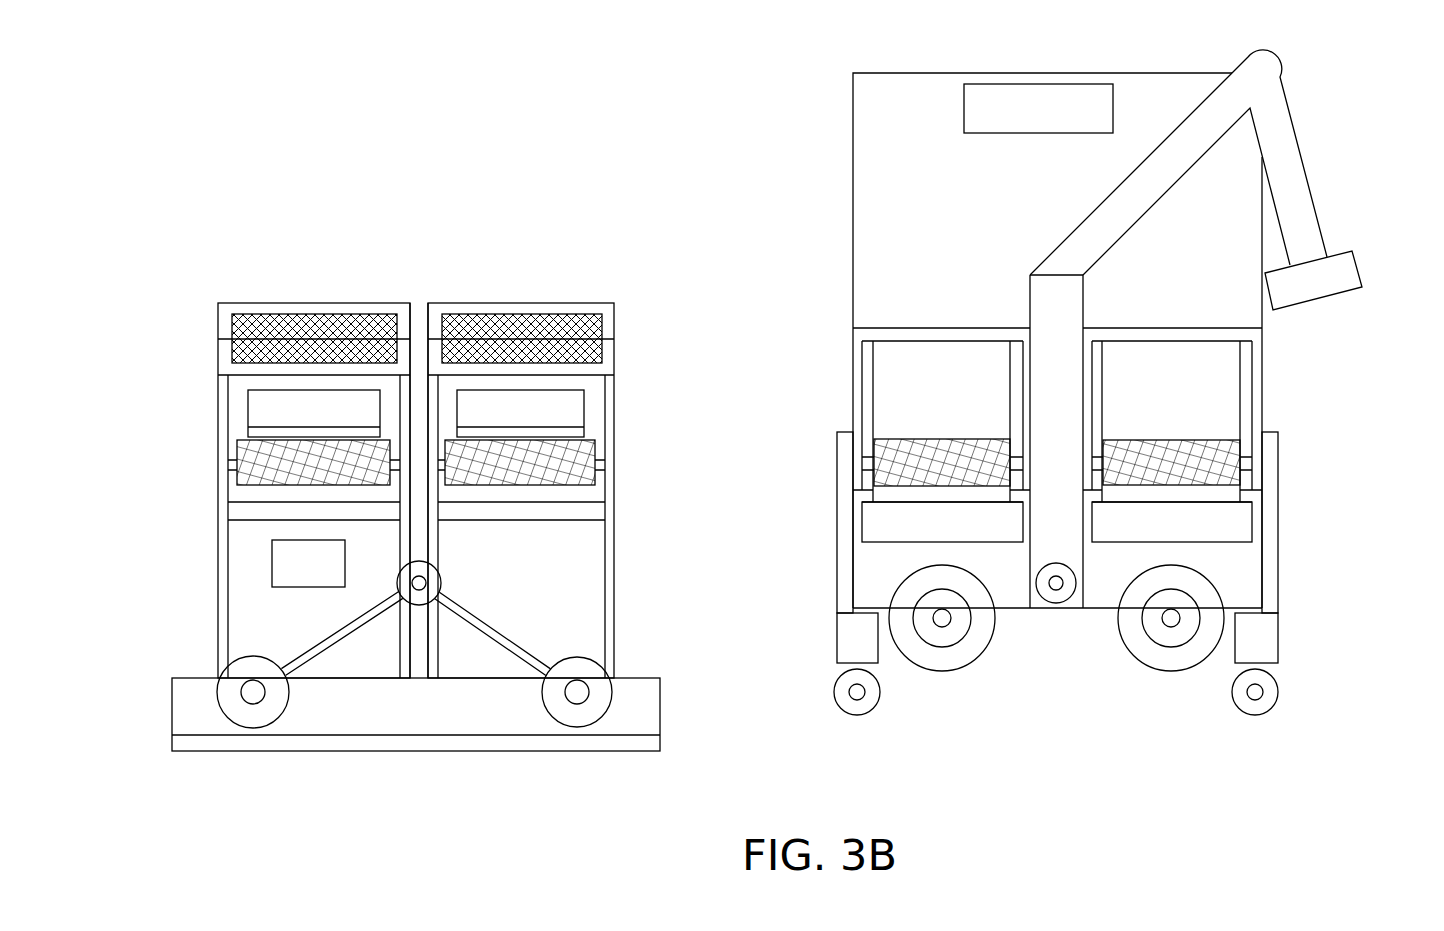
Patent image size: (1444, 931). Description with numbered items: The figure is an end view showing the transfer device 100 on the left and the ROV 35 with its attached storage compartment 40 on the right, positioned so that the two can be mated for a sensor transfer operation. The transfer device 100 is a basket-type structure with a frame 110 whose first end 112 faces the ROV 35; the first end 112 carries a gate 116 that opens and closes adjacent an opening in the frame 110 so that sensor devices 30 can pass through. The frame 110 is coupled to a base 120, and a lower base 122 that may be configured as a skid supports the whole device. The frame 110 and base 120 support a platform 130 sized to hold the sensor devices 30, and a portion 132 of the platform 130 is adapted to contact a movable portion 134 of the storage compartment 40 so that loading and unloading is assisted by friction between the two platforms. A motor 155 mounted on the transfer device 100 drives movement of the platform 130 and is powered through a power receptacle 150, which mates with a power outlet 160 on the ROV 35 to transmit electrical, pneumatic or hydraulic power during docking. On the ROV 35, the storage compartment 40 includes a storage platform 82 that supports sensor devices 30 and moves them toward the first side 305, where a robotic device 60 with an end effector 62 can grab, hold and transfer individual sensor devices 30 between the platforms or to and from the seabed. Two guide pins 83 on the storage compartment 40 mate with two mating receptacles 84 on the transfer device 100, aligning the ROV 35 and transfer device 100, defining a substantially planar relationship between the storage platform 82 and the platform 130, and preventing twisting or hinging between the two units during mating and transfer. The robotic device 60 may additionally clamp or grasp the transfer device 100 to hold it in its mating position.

The transfer device 100 is at (423, 208).
The frame 110 is at (218, 395).
The first end 112 is at (652, 268).
The gate 116 is at (305, 312).
The base 120 is at (198, 616).
The base 122 is at (438, 752).
The platform 130 is at (453, 437).
The portion of the platform 132 is at (240, 448).
The power receptacle 150 is at (441, 581).
The motor 155 is at (398, 566).
The sensor device 30 is at (584, 400).
The mating receptacle 84 is at (253, 705).
The ROV 35 is at (853, 138).
The first side 305 is at (805, 283).
The robotic device 60 is at (1264, 64).
The end effector 62 is at (1355, 262).
The storage platform 82 is at (923, 439).
The movable portion 134 is at (878, 452).
The storage compartment 40 is at (1345, 558).
The power outlet 160 is at (1054, 603).
The guide pin 83 is at (857, 700).